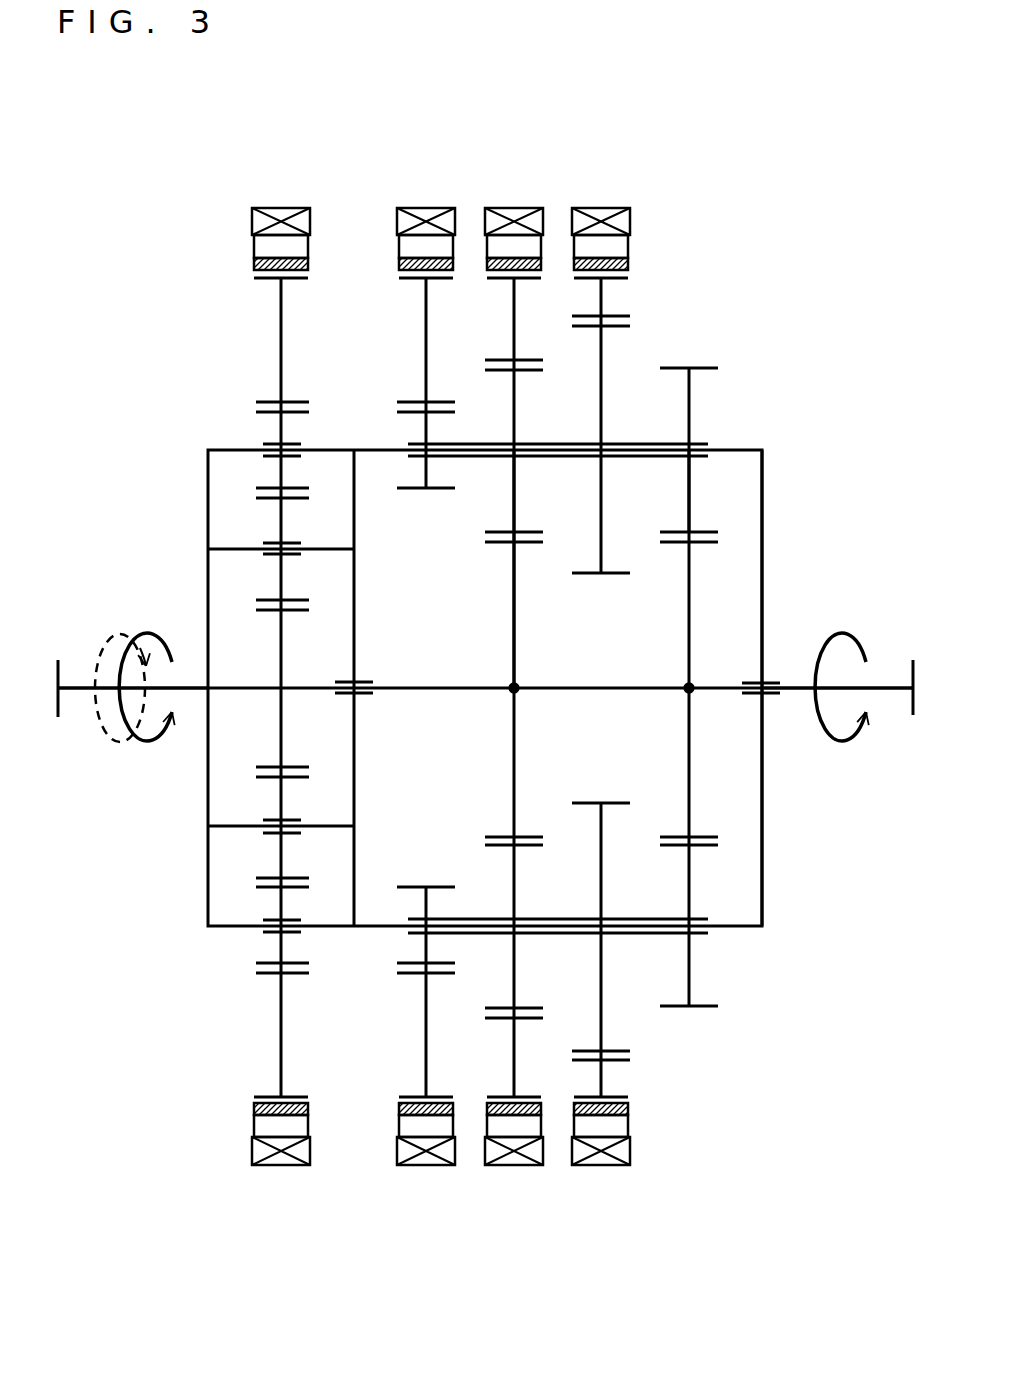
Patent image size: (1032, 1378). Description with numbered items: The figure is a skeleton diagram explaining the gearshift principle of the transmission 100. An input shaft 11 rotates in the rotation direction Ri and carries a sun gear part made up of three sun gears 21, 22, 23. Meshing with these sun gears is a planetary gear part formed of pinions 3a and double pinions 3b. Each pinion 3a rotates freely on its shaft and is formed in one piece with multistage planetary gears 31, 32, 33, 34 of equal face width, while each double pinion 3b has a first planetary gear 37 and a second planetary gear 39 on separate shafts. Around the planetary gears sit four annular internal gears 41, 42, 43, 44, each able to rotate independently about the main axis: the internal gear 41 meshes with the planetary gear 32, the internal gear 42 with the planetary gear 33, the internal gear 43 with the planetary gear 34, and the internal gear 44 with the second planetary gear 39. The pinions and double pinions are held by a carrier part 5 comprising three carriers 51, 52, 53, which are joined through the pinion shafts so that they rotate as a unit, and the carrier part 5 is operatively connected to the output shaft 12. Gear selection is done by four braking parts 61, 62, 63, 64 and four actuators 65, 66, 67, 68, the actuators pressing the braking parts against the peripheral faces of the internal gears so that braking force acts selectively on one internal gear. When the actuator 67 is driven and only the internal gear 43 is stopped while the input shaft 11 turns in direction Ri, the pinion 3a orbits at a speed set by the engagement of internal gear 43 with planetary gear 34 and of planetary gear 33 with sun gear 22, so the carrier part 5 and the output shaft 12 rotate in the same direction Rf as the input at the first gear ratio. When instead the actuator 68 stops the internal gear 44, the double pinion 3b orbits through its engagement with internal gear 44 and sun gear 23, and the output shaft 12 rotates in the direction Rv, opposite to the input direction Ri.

The transmission 100 is at (167, 124).
The input shaft 11 is at (893, 693).
The output shaft 12 is at (72, 693).
The sun gear 21 is at (682, 708).
The sun gear 22 is at (508, 733).
The sun gear 23 is at (273, 697).
The pinion 3a is at (709, 410).
The double pinion 3b is at (243, 940).
The planetary gear 31 is at (710, 960).
The planetary gear 32 is at (618, 1015).
The planetary gear 33 is at (526, 973).
The planetary gear 34 is at (407, 945).
The first planetary gear 37 is at (268, 518).
The second planetary gear 39 is at (268, 425).
The internal gear 41 is at (614, 297).
The internal gear 42 is at (527, 311).
The internal gear 43 is at (408, 312).
The internal gear 44 is at (267, 338).
The carrier part 5 is at (793, 467).
The carrier 51 is at (764, 558).
The carrier 52 is at (356, 615).
The carrier 53 is at (208, 868).
The braking part 61 is at (628, 248).
The braking part 62 is at (487, 247).
The braking part 63 is at (399, 247).
The braking part 64 is at (254, 247).
The actuator 65 is at (600, 1166).
The actuator 66 is at (513, 1166).
The actuator 67 is at (426, 1166).
The actuator 68 is at (280, 1166).
The rotation direction Rv is at (123, 637).
The rotation direction Rf is at (150, 742).
The rotation direction Ri is at (845, 633).